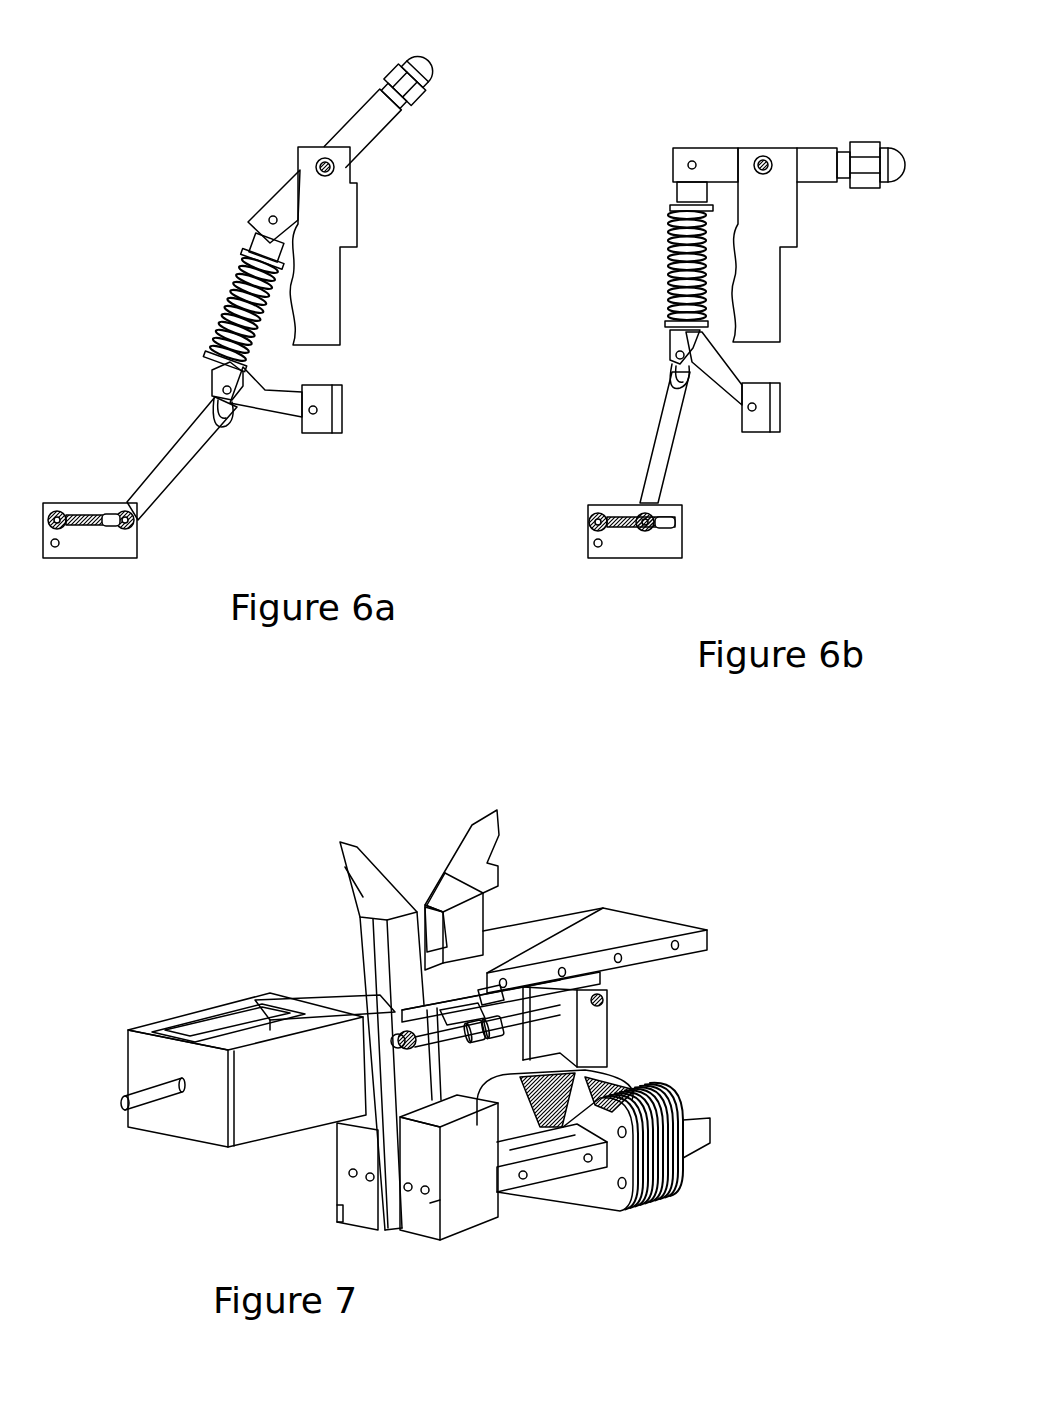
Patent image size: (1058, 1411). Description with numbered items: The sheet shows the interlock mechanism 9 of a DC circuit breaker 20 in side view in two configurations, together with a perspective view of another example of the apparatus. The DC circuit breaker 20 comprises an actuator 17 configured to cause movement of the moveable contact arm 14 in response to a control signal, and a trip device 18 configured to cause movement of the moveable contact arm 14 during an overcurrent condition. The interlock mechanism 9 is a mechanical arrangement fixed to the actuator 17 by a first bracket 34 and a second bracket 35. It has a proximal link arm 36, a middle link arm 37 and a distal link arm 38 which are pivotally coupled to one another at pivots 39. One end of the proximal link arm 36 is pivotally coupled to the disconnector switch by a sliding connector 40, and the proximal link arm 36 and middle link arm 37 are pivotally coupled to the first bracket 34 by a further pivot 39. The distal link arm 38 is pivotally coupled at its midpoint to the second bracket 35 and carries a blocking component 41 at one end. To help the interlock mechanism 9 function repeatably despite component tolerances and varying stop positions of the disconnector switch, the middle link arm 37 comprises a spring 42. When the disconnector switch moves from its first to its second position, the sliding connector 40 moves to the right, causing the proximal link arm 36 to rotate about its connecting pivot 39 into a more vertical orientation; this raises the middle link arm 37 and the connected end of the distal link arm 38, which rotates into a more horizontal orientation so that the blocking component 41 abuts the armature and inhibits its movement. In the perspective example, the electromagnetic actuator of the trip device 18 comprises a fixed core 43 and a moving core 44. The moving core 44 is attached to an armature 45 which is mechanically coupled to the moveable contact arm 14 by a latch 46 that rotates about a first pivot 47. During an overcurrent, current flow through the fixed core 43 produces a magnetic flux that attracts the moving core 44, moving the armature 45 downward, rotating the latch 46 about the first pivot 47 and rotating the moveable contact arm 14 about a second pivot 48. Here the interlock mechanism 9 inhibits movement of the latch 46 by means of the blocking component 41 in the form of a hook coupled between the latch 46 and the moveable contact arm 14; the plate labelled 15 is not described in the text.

In FIG. 6a, the interlock mechanism 9 is at (152, 203).
In FIG. 6b, the interlock mechanism 9 is at (596, 208).
In FIG. 7, the moveable contact arm 14 is at (373, 875).
In FIG. 7, the second gripping finger / plate 15 is at (487, 845).
In FIG. 7, the actuator 17 is at (343, 1055).
In FIG. 7, the trip device 18 is at (662, 1224).
In FIG. 7, the DC circuit breaker 20 is at (258, 868).
In FIG. 6a, the first bracket 34 is at (325, 395).
In FIG. 6b, the first bracket 34 is at (765, 393).
In FIG. 6a, the second bracket 35 is at (330, 309).
In FIG. 6b, the second bracket 35 is at (770, 310).
In FIG. 6a, the proximal link arm 36 is at (175, 460).
In FIG. 6b, the proximal link arm 36 is at (660, 468).
In FIG. 6a, the middle link arm 37 is at (207, 316).
In FIG. 6b, the middle link arm 37 is at (648, 297).
In FIG. 6a, the distal link arm 38 is at (360, 123).
In FIG. 6b, the distal link arm 38 is at (808, 163).
In FIG. 6a, the pivots 39 is at (317, 165).
In FIG. 6b, the pivots 39 is at (760, 158).
In FIG. 6a, the sliding connector 40 is at (107, 545).
In FIG. 6b, the sliding connector 40 is at (633, 545).
In FIG. 6a, the blocking component 41 is at (413, 77).
In FIG. 6b, the blocking component 41 is at (898, 160).
In FIG. 7, the blocking component 41 is at (487, 997).
In FIG. 6a, the spring 42 is at (240, 300).
In FIG. 6b, the spring 42 is at (673, 250).
In FIG. 7, the fixed core 43 is at (623, 1148).
In FIG. 7, the moving core 44 is at (557, 1103).
In FIG. 7, the armature 45 is at (603, 1000).
In FIG. 7, the latch 46 is at (507, 1012).
In FIG. 7, the first pivot 47 is at (483, 1022).
In FIG. 7, the second pivot 48 is at (403, 1034).